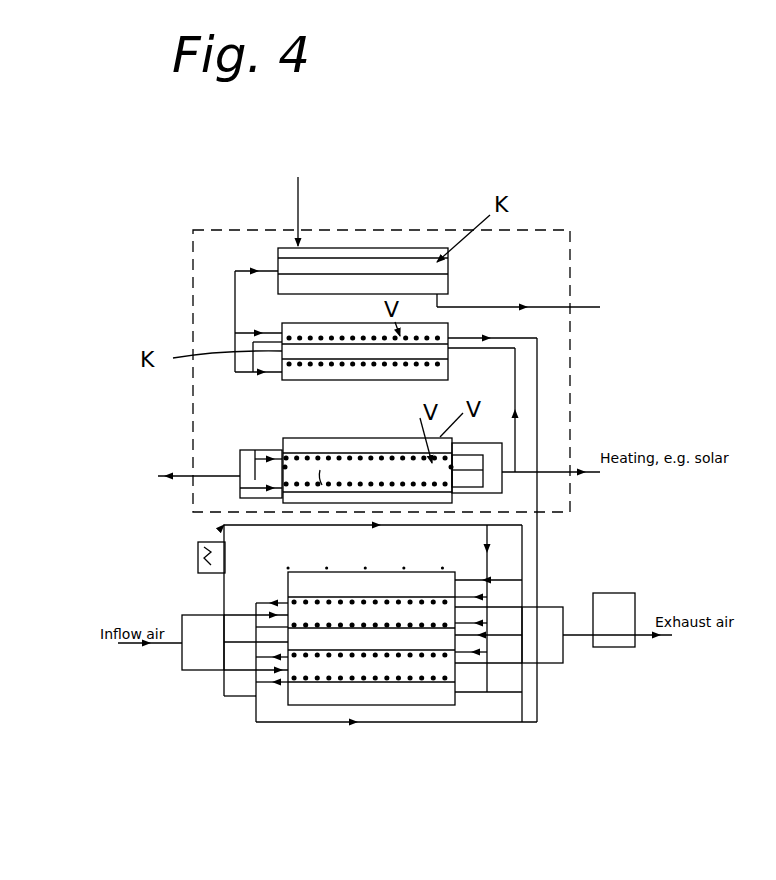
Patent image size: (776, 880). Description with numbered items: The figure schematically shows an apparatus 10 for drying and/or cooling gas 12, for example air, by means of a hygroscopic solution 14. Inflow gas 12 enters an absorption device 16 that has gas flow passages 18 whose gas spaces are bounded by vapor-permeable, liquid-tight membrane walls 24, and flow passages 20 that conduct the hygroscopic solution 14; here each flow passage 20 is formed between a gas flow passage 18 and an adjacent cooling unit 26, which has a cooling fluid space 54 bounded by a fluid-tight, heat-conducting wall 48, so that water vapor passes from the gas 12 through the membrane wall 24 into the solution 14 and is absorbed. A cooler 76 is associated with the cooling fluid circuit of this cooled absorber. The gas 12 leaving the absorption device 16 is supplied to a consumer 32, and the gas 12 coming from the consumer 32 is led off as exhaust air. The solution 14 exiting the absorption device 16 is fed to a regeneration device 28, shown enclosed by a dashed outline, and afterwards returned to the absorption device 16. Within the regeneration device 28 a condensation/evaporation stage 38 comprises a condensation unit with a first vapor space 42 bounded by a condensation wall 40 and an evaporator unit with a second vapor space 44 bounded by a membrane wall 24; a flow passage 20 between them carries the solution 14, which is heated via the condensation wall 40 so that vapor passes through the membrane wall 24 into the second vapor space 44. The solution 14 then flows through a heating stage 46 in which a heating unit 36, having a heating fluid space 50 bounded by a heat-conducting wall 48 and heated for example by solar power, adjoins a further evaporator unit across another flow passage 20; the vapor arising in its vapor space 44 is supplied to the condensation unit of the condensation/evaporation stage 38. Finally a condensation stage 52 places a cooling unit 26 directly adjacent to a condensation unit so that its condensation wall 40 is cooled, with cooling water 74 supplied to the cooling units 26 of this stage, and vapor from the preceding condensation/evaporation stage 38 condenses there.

The apparatus 10 is at (460, 153).
The gas 12 is at (128, 645).
The hygroscopic solution 14 is at (256, 430).
The absorption device 16 is at (368, 742).
The gas flow passage 18 is at (338, 670).
The flow passage 20 is at (268, 447).
The membrane wall 24 is at (320, 338).
The cooling unit 26 is at (412, 252).
The regeneration device 28 is at (533, 212).
The consumer 32 is at (612, 600).
The heating unit 36 is at (297, 438).
The condensation/evaporation stage 38 is at (226, 368).
The condensation wall 40 is at (300, 262).
The first vapor space 42 is at (315, 268).
The second vapor space 44 is at (380, 330).
The heating stage 46 is at (215, 461).
The heat-conducting wall 48 is at (270, 516).
The heating fluid space 50 is at (428, 493).
The condensation stage 52 is at (236, 257).
The cooling fluid space 54 is at (365, 207).
The cooling water 74 is at (295, 192).
The cooler 76 is at (198, 560).